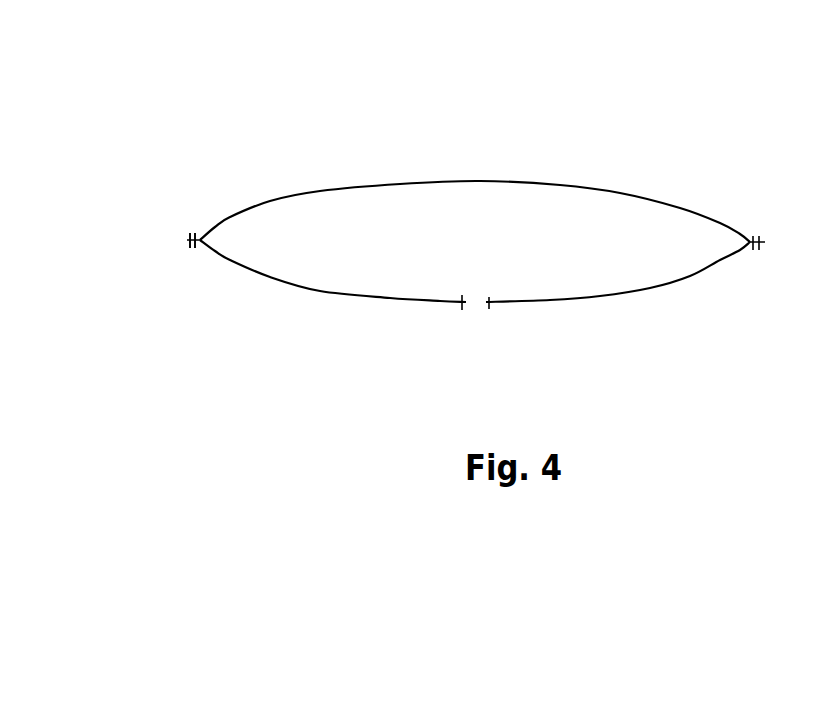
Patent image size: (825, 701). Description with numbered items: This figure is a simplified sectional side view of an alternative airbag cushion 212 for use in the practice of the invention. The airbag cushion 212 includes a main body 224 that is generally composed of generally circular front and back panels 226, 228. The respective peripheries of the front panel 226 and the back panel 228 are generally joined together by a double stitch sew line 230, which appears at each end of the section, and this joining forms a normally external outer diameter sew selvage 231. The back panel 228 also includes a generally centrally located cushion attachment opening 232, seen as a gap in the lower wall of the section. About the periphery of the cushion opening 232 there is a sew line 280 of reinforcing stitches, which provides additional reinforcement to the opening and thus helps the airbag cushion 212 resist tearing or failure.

The airbag cushion 212 is at (474, 216).
The main body 224 is at (556, 179).
The front panel 226 is at (318, 184).
The back panel 228 is at (627, 300).
The double stitch sew line 230 is at (192, 256).
The outer diameter sew selvage 231 is at (185, 236).
The sew line of reinforcing stitches 280 is at (461, 296).
The cushion attachment opening 232 is at (481, 314).